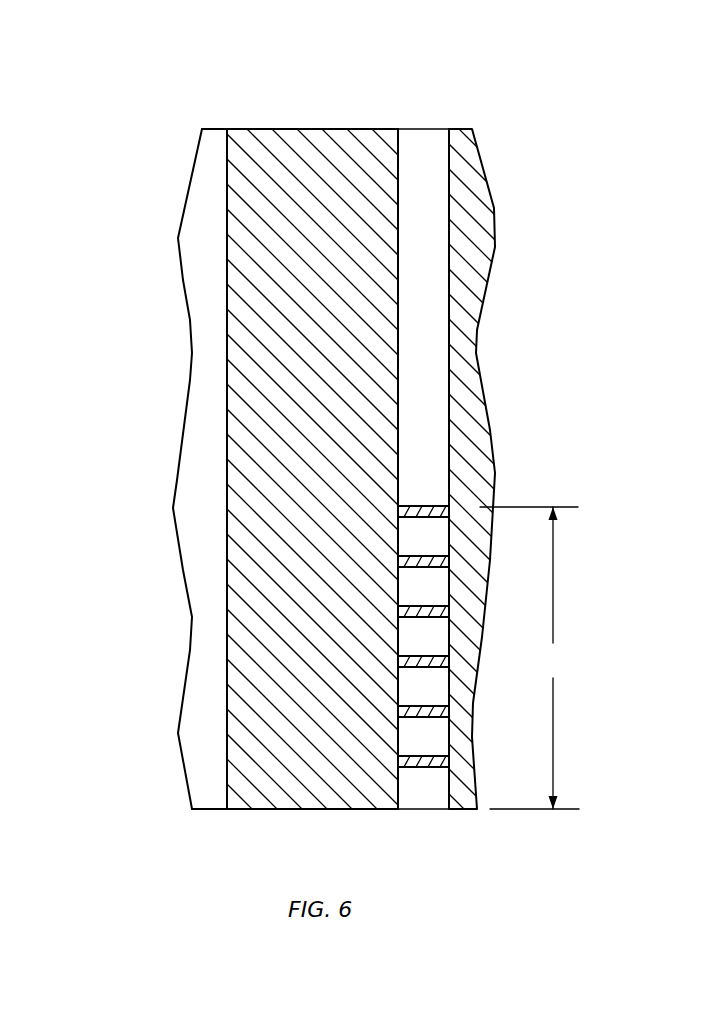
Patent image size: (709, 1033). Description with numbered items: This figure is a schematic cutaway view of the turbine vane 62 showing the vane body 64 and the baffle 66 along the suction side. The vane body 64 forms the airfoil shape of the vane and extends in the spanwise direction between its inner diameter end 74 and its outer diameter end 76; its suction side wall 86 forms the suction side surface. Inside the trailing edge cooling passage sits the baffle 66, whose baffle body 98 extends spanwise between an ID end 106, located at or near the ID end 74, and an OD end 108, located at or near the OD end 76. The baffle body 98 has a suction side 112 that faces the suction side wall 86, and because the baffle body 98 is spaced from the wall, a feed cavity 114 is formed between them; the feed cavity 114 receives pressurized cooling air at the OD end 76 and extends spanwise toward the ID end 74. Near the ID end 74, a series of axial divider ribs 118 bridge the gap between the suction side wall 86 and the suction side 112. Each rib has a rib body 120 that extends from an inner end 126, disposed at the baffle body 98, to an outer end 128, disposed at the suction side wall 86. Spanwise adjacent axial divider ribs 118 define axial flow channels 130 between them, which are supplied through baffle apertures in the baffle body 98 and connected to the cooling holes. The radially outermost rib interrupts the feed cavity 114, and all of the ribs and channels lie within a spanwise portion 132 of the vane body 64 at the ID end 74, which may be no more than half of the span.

The turbine vane 62 is at (354, 446).
The vane body 64 is at (354, 469).
The baffle 66 is at (354, 439).
The inner diameter (ID) end 74 is at (437, 835).
The outer diameter (OD) end 76 is at (388, 110).
The suction side wall 86 is at (468, 413).
The baffle body 98 is at (272, 340).
The ID end of the baffle body 106 is at (267, 811).
The OD end of the baffle body 108 is at (257, 128).
The suction side of the baffle body 112 is at (401, 343).
The feed cavity 114 is at (436, 297).
The axial divider ribs 118 is at (437, 497).
The rib body 120 is at (450, 526).
The inner end of the rib body 126 is at (437, 511).
The outer end of the rib body 128 is at (450, 509).
The axial flow channels 130 is at (446, 548).
The spanwise portion 132 is at (529, 658).